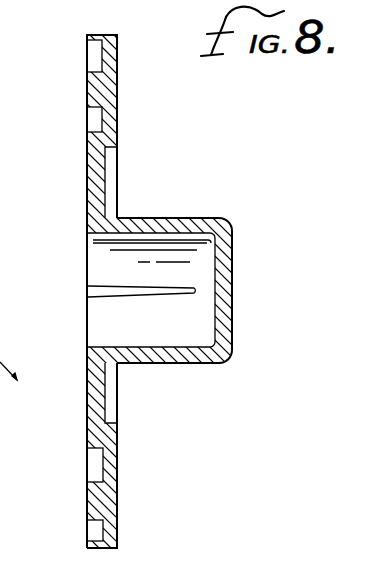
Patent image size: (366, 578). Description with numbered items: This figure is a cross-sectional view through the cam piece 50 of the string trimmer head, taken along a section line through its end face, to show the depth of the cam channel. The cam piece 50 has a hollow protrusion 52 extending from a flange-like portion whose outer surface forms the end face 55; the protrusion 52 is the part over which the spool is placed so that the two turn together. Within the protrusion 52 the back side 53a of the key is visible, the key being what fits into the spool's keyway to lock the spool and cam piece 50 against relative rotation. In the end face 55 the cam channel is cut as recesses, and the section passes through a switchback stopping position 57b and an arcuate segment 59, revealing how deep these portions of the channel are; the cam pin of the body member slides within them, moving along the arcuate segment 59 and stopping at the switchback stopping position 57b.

The cam piece 50 is at (223, 185).
The protrusion 52 is at (232, 300).
The back side of the key 53a is at (108, 291).
The end face 55 is at (86, 406).
The switchback stopping position 57b is at (92, 57).
The arcuate segment 59 is at (92, 117).